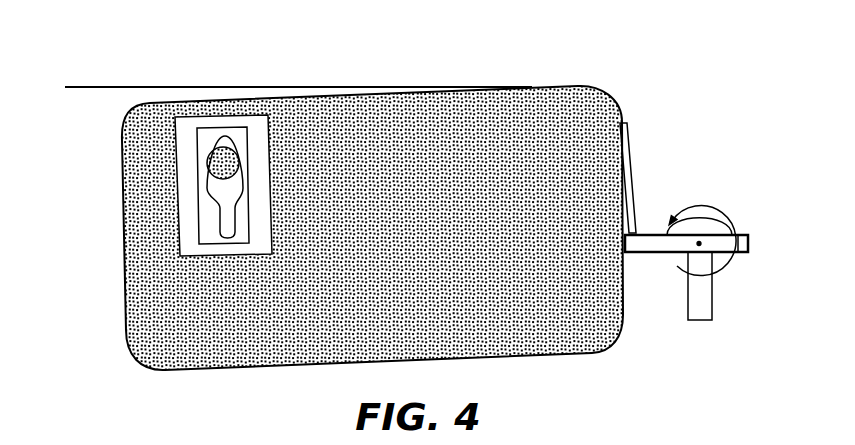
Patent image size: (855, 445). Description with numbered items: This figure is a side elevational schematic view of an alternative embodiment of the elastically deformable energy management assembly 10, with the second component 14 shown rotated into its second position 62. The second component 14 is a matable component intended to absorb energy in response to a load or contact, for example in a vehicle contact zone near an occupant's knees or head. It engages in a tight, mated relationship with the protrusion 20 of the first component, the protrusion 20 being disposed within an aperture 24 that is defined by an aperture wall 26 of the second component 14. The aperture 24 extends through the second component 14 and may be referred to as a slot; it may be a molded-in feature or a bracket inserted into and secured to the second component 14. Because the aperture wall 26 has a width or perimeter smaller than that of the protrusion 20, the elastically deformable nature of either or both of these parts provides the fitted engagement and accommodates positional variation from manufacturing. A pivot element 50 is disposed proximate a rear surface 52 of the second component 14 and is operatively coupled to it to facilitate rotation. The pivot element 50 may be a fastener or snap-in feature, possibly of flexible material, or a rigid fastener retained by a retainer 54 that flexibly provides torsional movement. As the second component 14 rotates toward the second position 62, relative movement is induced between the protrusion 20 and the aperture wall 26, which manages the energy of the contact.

The elastically deformable energy management assembly 10 is at (411, 189).
The second component 14 is at (329, 211).
The protrusion 20 is at (212, 147).
The aperture 24 is at (169, 160).
The aperture wall 26 is at (228, 206).
The pivot element 50 is at (703, 241).
The rear surface 52 is at (623, 272).
The retainer 54 is at (638, 230).
The second position 62 is at (515, 82).